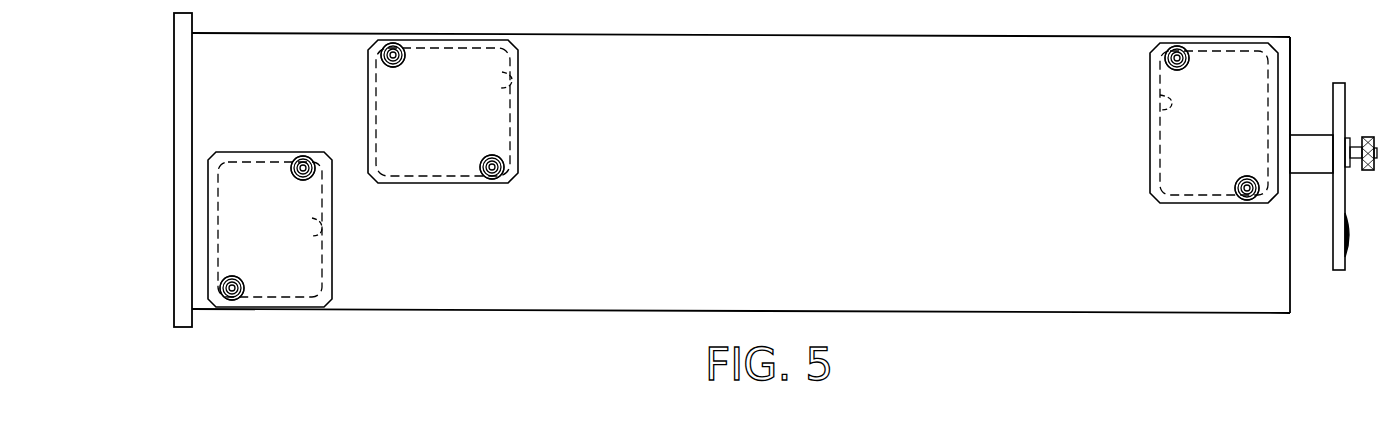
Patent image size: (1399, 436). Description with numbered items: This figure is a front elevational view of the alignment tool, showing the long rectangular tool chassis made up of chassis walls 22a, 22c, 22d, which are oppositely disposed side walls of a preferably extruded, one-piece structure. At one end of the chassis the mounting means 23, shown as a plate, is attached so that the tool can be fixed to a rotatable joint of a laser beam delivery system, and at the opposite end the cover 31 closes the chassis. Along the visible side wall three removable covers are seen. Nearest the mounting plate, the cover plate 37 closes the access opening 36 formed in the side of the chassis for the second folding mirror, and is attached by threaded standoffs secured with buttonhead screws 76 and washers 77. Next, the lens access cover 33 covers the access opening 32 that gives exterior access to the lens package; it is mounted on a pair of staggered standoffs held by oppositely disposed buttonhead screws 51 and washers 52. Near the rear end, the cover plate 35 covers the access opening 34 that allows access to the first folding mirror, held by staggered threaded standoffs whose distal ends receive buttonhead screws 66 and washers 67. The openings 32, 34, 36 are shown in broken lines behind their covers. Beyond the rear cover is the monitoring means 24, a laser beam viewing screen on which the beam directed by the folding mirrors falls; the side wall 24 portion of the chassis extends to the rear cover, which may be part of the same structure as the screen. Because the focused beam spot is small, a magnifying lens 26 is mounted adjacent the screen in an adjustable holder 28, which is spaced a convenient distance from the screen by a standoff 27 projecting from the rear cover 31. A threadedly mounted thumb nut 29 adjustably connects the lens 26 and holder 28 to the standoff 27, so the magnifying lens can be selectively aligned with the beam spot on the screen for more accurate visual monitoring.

The chassis wall 22a is at (823, 35).
The chassis wall 22c is at (538, 312).
The chassis wall 22d is at (998, 296).
The mounting means 23 is at (182, 60).
The monitoring means 24 is at (1292, 275).
The magnifying lens 26 is at (1347, 225).
The standoff 27 is at (1300, 150).
The adjustable holder 28 is at (1338, 85).
The thumb nut 29 is at (1366, 138).
The cover 31 is at (1292, 42).
The access opening 32 is at (512, 84).
The lens access cover 33 is at (460, 65).
The access opening 34 is at (1165, 108).
The cover plate 35 is at (1208, 62).
The access opening 36 is at (325, 236).
The cover plate 37 is at (249, 178).
The buttonhead screw 51 is at (392, 45).
The washer 52 is at (396, 44).
The buttonhead screw 66 is at (1176, 47).
The washer 67 is at (1240, 198).
The buttonhead screw 76 is at (295, 164).
The washer 77 is at (306, 160).